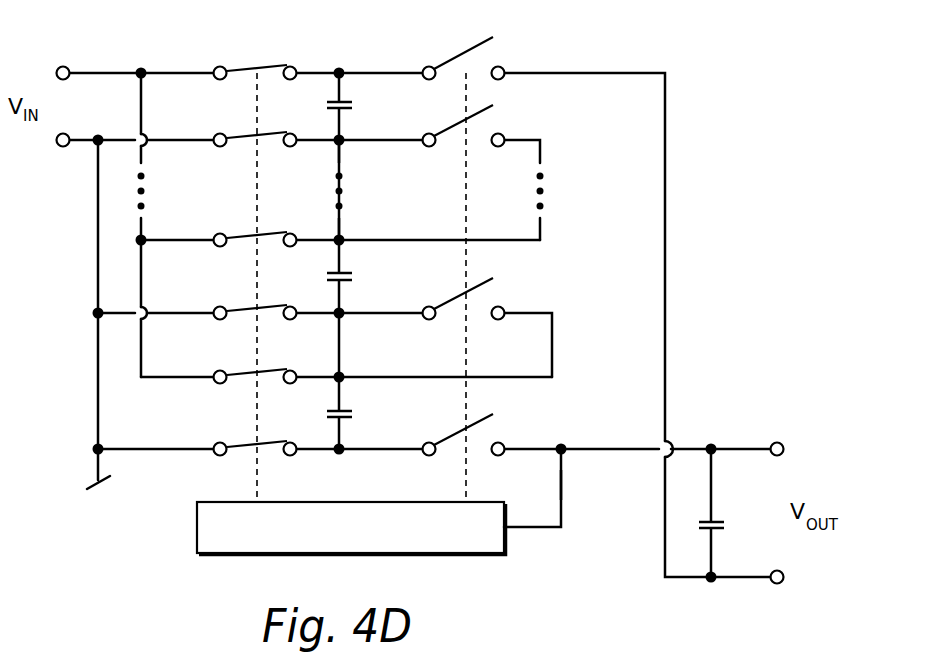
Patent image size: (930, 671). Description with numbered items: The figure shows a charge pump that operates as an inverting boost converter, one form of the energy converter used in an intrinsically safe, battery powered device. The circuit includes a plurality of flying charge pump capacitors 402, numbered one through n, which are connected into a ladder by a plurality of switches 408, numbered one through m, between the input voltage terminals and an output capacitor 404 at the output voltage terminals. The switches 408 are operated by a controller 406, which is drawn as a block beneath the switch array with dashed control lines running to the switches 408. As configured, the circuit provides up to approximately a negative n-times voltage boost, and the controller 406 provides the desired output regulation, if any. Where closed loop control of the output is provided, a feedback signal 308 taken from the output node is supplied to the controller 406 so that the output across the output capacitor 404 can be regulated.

The switches 408 is at (530, 405).
The flying charge pump capacitors 402 is at (352, 105).
The output capacitor 404 is at (722, 524).
The controller 406 is at (197, 525).
The feedback signal 308 is at (561, 490).